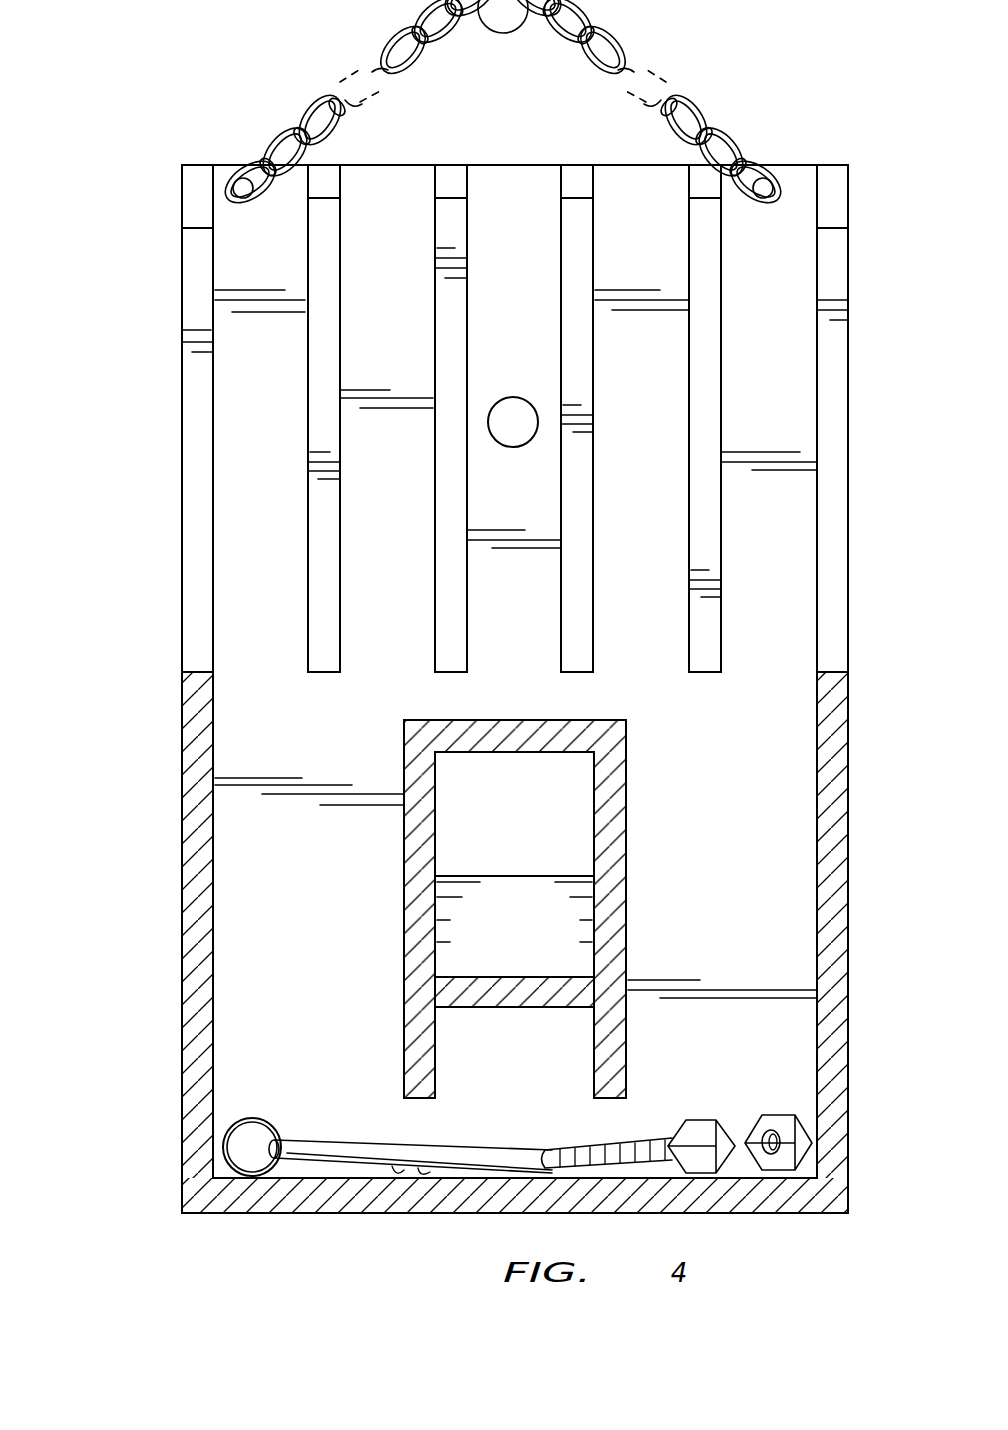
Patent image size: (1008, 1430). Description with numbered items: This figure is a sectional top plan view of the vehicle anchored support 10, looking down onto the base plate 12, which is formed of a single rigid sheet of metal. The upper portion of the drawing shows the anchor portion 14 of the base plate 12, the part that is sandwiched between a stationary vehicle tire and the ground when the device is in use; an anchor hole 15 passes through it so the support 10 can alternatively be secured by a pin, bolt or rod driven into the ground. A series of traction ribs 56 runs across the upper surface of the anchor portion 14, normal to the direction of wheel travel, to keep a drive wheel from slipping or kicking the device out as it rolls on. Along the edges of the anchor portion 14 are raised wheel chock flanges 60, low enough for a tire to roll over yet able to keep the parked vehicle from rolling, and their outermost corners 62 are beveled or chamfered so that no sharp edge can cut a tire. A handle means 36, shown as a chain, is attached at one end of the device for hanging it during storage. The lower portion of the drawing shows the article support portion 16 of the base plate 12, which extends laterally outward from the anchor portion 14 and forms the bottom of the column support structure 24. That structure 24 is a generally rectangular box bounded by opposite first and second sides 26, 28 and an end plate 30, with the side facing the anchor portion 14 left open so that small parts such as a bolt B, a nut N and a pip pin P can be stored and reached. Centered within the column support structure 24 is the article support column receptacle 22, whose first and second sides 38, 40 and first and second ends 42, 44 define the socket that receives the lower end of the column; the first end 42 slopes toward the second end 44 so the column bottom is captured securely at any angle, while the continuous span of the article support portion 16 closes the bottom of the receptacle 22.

The vehicle anchored support 10 is at (130, 1052).
The base plate 12 is at (246, 584).
The anchor portion 14 is at (491, 349).
The anchor hole 15 is at (513, 447).
The article support portion 16 is at (492, 843).
The article support column receptacle 22 is at (542, 891).
The column support structure 24 is at (184, 1213).
The first side 26 is at (848, 935).
The second side 28 is at (182, 936).
The end plate 30 is at (510, 1213).
The handle means 36 is at (578, 58).
The first side of receptacle 38 is at (626, 890).
The second side of receptacle 40 is at (404, 942).
The first end of receptacle 42 is at (491, 946).
The second end of receptacle 44 is at (506, 720).
The traction ribs 56 is at (435, 331).
The wheel chock flanges 60 is at (182, 465).
The outermost corners 62 is at (190, 201).
The pip pin P is at (340, 1141).
The bolt B is at (586, 1141).
The nut N is at (770, 1115).